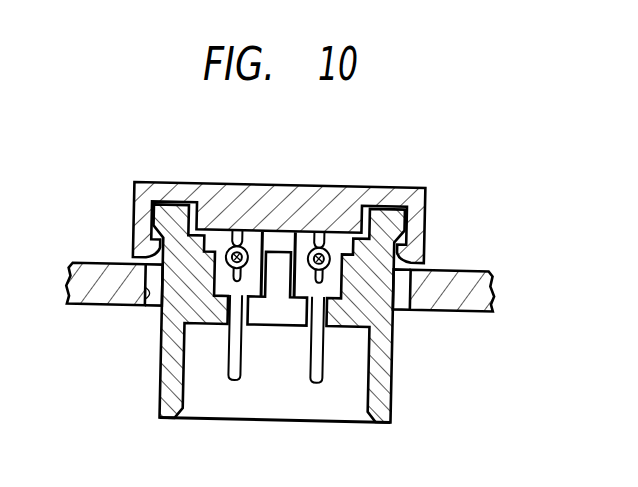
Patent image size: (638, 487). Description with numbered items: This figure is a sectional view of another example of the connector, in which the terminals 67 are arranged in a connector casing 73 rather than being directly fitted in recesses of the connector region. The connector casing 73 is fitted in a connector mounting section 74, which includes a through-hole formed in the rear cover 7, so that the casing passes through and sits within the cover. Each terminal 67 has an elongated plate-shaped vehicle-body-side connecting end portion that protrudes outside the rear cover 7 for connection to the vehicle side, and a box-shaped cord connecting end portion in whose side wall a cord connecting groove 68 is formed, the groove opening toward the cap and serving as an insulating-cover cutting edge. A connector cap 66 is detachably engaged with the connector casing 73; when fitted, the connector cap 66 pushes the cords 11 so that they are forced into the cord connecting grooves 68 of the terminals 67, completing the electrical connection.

The connector cap 66 is at (372, 190).
The connector casing 73 is at (394, 362).
The rear cover 7 is at (456, 278).
The connector mounting section 74 is at (145, 302).
The cord connecting groove 68 is at (235, 231).
The cord 11 is at (316, 231).
The terminal 67 is at (303, 350).